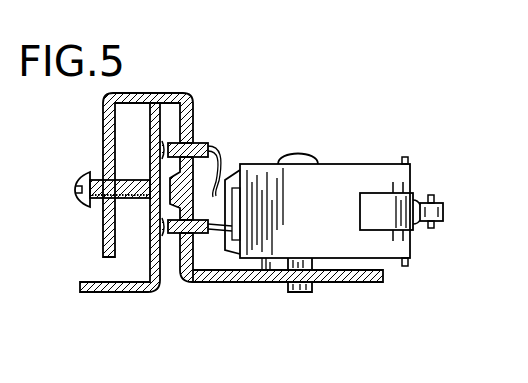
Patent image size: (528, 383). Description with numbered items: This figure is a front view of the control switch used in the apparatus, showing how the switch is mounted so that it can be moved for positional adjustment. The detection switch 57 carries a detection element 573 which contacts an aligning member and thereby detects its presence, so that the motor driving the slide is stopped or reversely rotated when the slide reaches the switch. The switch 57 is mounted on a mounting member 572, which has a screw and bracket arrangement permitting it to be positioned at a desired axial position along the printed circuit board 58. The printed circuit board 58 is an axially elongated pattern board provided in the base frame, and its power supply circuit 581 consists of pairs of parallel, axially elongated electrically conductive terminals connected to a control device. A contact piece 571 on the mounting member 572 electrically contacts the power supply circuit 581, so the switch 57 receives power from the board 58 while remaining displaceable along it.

The printed circuit board 58 is at (162, 105).
The power supply circuit 581 is at (193, 114).
The contact piece 571 is at (181, 236).
The detection switch 57 is at (350, 172).
The mounting member 572 is at (372, 280).
The detection element 573 is at (444, 211).